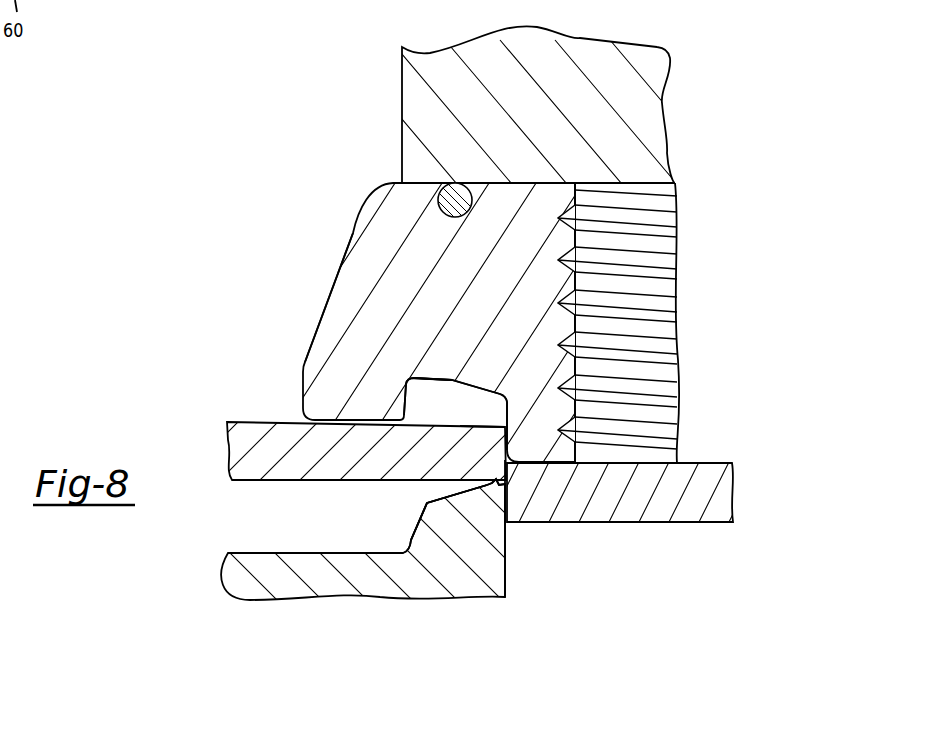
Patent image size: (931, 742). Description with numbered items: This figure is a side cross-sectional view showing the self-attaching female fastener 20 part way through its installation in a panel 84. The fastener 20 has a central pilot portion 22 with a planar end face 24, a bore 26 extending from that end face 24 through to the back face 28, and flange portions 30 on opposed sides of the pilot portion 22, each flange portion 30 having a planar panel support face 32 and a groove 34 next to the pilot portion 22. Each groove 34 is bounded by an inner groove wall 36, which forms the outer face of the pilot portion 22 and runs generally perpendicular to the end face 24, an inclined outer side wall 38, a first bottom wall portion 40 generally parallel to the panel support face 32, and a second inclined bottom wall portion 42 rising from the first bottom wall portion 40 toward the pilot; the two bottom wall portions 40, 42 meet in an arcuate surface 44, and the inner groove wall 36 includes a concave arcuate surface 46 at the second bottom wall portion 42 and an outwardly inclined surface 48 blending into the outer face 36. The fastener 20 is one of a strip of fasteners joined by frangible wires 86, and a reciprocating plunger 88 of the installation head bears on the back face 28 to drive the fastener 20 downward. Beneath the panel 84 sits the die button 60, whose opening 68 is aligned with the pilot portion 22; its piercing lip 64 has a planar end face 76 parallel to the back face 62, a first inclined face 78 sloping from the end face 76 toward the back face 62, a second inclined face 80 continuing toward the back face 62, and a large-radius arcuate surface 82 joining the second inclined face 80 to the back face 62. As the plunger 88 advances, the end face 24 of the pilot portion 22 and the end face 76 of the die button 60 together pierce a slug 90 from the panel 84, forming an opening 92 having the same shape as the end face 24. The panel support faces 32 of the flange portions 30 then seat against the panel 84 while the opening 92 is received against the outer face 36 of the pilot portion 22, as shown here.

The self-attaching female fastener 20 is at (300, 253).
The central pilot portion 22 is at (542, 450).
The planar end face 24 is at (560, 468).
The bore 26 is at (655, 287).
The back face 28 is at (493, 183).
The flange portions 30 is at (315, 371).
The planar panel support face 32 is at (352, 423).
The groove 34 is at (456, 395).
The inner groove wall 36 is at (505, 427).
The inclined outer side wall 38 is at (405, 386).
The first bottom wall portion 40 is at (417, 372).
The second inclined bottom wall portion 42 is at (486, 387).
The arcuate surface 44 is at (450, 372).
The concave arcuate surface 46 is at (508, 392).
The outwardly inclined surface 48 is at (507, 404).
The die button 60 is at (286, 586).
The back face 62 is at (267, 553).
The piercing lip 64 is at (448, 562).
The opening 68 is at (508, 580).
The planar end face 76 is at (489, 482).
The first inclined face 78 is at (425, 504).
The second inclined face 80 is at (410, 530).
The arcuate surface 82 is at (402, 552).
The panel 84 is at (255, 421).
The frangible wires 86 is at (453, 198).
The reciprocating plunger 88 is at (638, 105).
The slug 90 is at (638, 507).
The opening 92 is at (506, 462).